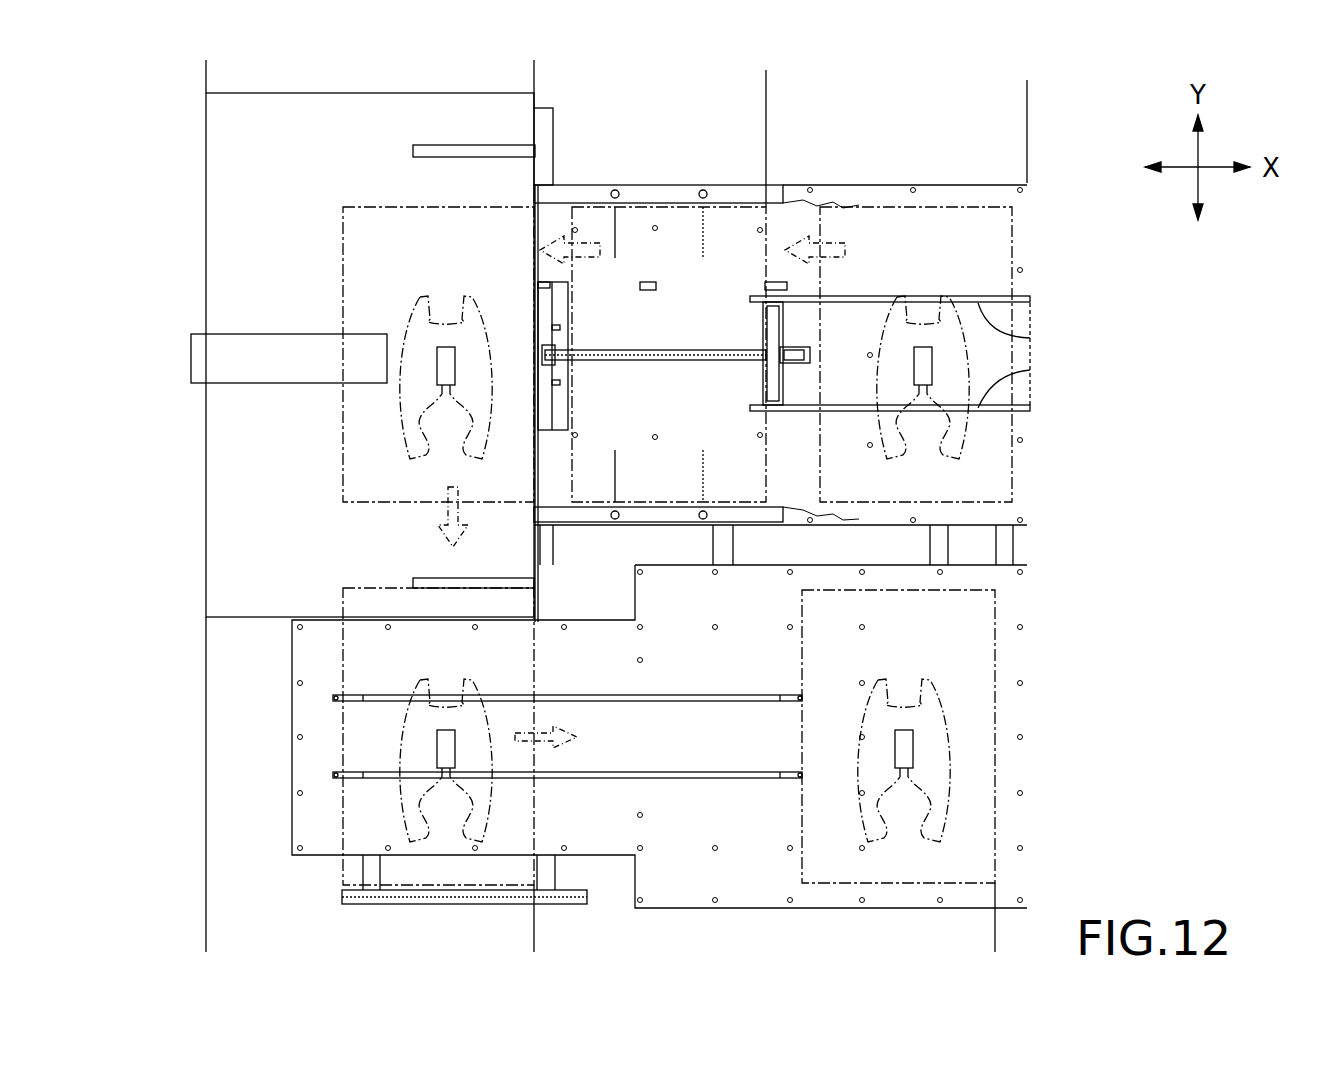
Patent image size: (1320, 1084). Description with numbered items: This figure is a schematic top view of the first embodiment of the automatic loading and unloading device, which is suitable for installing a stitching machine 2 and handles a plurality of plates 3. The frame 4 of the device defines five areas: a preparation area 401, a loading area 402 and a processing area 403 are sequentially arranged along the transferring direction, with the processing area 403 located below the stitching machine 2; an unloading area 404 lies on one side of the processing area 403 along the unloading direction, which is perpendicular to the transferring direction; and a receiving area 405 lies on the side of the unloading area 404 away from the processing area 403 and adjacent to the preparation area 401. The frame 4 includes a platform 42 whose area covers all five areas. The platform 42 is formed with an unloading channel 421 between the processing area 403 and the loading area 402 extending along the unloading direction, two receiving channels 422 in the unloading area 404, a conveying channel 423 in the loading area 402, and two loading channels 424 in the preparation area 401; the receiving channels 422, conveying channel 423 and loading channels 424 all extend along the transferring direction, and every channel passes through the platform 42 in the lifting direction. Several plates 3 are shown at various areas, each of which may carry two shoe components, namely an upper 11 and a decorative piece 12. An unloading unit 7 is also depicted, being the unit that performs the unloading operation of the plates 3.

The stitching machine 2 is at (191, 358).
The plate 3 is at (343, 270).
The frame 4 is at (1027, 486).
The unloading unit 7 is at (413, 152).
The upper 11 is at (487, 335).
The decorative piece 12 is at (447, 360).
The platform 42 is at (292, 703).
The preparation area 401 is at (1027, 93).
The loading area 402 is at (766, 83).
The processing area 403 is at (206, 73).
The unloading area 404 is at (534, 942).
The receiving area 405 is at (995, 942).
The unloading channel 421 is at (537, 265).
The receiving channels 422 is at (383, 695).
The conveying channel 423 is at (668, 348).
The loading channels 424 is at (1032, 371).